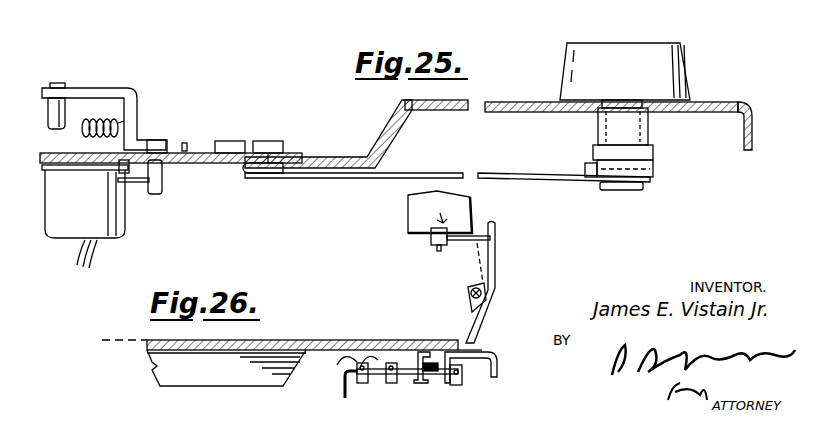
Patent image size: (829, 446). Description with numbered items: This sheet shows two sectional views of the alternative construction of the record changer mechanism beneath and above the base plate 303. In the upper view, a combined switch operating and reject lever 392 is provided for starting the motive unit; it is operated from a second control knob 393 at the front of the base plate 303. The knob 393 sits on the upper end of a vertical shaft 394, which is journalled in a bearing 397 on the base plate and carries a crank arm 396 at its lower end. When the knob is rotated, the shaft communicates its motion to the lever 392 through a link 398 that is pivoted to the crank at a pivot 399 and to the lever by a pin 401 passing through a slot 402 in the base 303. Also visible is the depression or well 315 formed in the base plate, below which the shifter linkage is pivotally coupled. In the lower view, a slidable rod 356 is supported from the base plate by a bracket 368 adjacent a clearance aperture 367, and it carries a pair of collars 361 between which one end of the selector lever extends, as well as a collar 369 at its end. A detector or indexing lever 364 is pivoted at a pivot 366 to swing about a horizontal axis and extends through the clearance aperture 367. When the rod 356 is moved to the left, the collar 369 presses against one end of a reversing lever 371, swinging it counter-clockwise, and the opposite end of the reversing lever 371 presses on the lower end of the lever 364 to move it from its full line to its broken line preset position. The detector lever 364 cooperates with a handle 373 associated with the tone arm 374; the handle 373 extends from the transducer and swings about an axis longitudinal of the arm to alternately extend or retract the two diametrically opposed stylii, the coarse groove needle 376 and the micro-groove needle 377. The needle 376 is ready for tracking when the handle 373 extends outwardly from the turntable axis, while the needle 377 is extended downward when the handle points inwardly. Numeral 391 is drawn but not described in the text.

In FIG. 25, the combined switch operating and reject lever 392 is at (137, 98).
In FIG. 25, the depression or well 315 is at (202, 166).
In FIG. 26, the depression or well 315 is at (165, 375).
In FIG. 25, the slot 402 is at (298, 157).
In FIG. 25, the pin 401 is at (268, 173).
In FIG. 25, the base plate 303 is at (470, 99).
In FIG. 26, the base plate 303 is at (343, 340).
In FIG. 25, the link 398 is at (427, 173).
In FIG. 25, the second control knob 393 is at (692, 64).
In FIG. 25, the bearing 397 is at (650, 128).
In FIG. 25, the vertical shaft 394 is at (598, 126).
In FIG. 25, the crank arm 396 is at (653, 162).
In FIG. 25, the pivot 399 is at (630, 190).
In FIG. 26, the tone arm 374 is at (470, 208).
In FIG. 26, the micro-groove needle 377 is at (437, 214).
In FIG. 26, the handle 373 is at (430, 238).
In FIG. 26, the coarse groove needle 376 is at (430, 247).
In FIG. 26, the lever arm 391 is at (525, 283).
In FIG. 26, the detector or indexing lever 364 is at (493, 253).
In FIG. 26, the pivot 366 is at (470, 294).
In FIG. 26, the bracket 368 is at (413, 360).
In FIG. 26, the collars 361 is at (357, 380).
In FIG. 26, the rod 356 is at (345, 362).
In FIG. 26, the reversing lever 371 is at (433, 365).
In FIG. 26, the clearance aperture 367 is at (497, 338).
In FIG. 26, the collar 369 is at (453, 385).